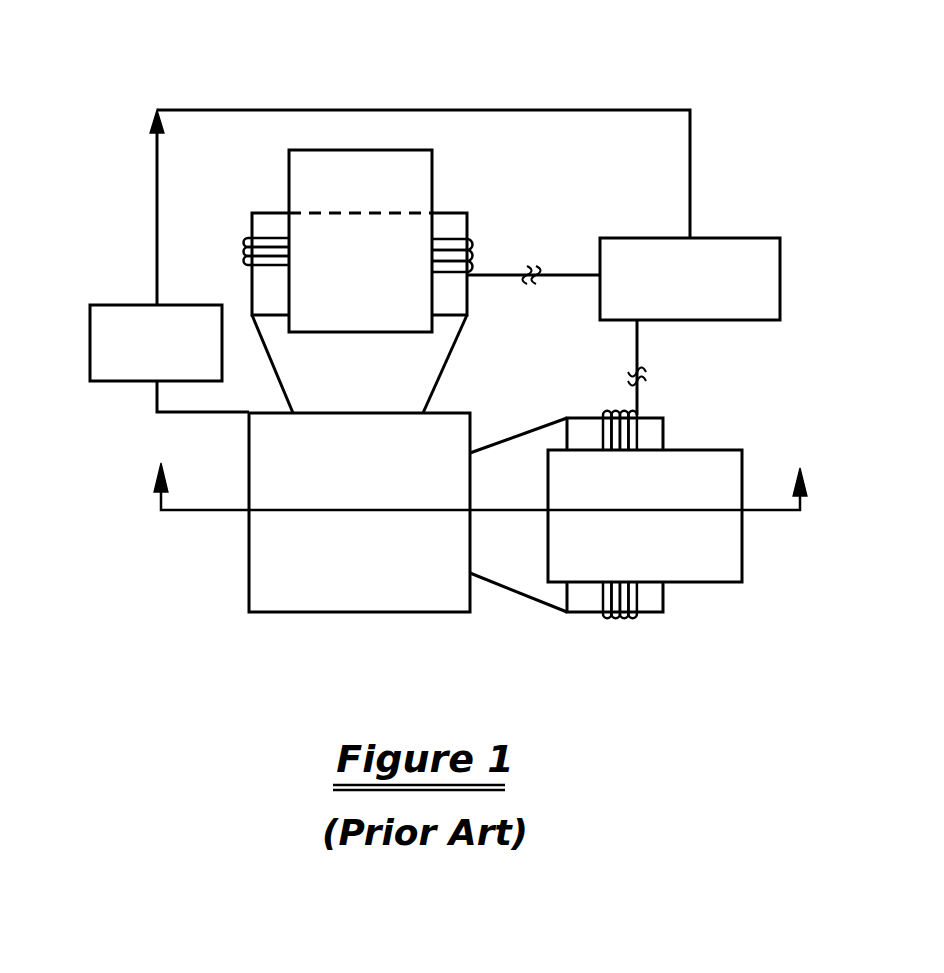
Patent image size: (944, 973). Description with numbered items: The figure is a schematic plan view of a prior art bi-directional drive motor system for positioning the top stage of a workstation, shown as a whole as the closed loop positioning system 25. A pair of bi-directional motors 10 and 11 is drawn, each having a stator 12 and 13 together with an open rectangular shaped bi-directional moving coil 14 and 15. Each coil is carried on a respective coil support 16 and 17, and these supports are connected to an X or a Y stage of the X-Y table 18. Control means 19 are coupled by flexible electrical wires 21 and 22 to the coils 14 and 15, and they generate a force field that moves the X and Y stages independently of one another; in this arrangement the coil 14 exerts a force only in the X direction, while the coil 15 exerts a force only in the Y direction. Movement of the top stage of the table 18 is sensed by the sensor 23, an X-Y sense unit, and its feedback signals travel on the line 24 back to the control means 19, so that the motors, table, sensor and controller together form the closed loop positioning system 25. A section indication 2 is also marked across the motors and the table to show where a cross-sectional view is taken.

The section line 2- 2 is at (482, 474).
The bi-directional motor 10 is at (645, 516).
The bi-directional motor 11 is at (360, 241).
The stator 12 is at (742, 557).
The stator 13 is at (289, 168).
The bi-directional moving coil 14 is at (637, 438).
The bi-directional moving coil 15 is at (245, 252).
The coil support 16 is at (527, 598).
The coil support 17 is at (447, 362).
The X-Y table 18 is at (359, 512).
The control means 19 is at (782, 272).
The flexible electrical wire 21 is at (640, 358).
The flexible electrical wire 22 is at (493, 272).
The sensor 23 is at (89, 355).
The feedback line 24 is at (692, 142).
The closed loop prior art positioning system 25 is at (482, 80).